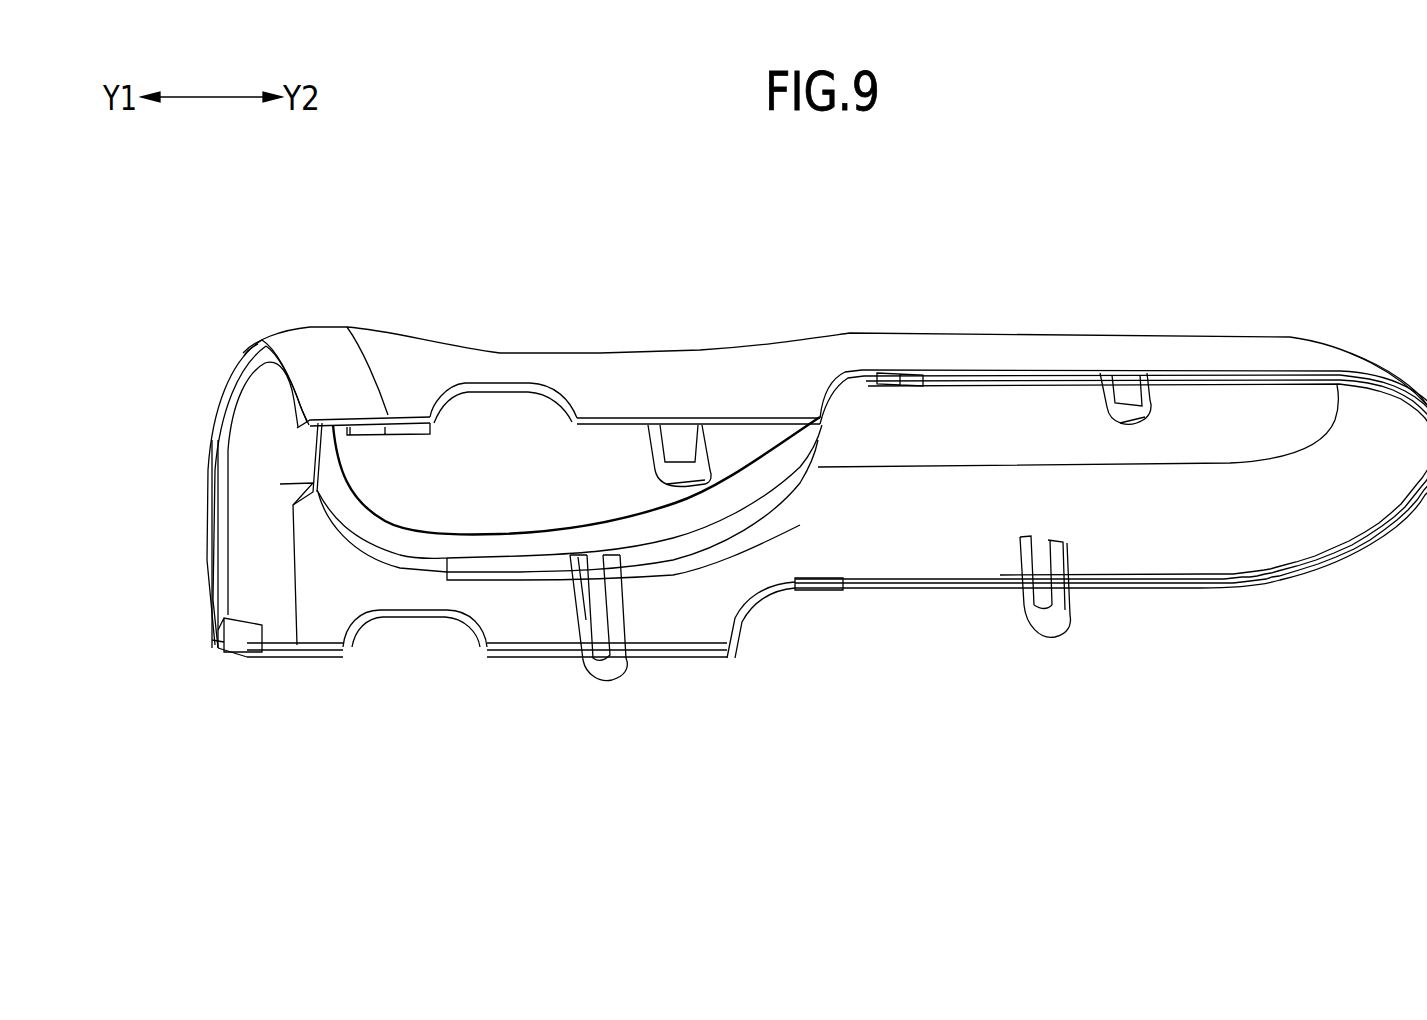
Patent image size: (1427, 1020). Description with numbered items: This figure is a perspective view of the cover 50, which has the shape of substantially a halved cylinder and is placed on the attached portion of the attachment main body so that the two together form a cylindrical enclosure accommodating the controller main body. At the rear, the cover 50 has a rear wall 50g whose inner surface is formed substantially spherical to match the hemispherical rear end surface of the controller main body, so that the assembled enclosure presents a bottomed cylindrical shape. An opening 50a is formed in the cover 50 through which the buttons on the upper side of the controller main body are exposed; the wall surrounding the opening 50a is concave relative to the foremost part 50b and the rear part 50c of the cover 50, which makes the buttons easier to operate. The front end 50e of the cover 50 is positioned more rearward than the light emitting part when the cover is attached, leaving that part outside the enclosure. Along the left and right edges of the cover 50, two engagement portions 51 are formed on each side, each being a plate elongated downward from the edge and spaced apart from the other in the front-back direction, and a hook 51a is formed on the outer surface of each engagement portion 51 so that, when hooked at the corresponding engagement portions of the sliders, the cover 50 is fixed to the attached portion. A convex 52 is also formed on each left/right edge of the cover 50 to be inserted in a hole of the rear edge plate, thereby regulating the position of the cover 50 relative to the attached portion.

The cover 50 is at (898, 315).
The opening 50a is at (497, 535).
The foremost part 50b is at (318, 327).
The rear part 50c is at (1165, 455).
The front end 50e is at (253, 355).
The rear wall 50g is at (1390, 480).
The engagement portion 51 is at (690, 432).
The hook 51a is at (1138, 413).
The convex 52 is at (905, 388).